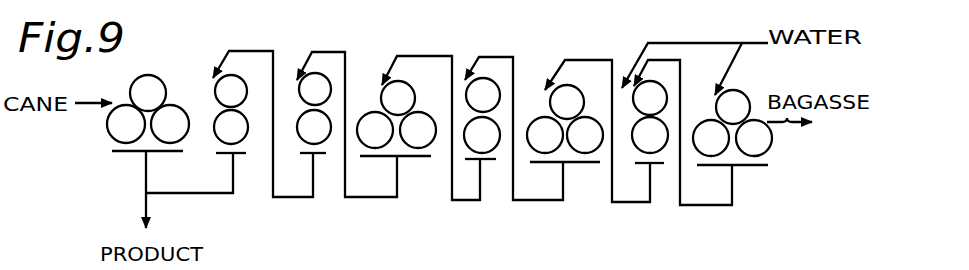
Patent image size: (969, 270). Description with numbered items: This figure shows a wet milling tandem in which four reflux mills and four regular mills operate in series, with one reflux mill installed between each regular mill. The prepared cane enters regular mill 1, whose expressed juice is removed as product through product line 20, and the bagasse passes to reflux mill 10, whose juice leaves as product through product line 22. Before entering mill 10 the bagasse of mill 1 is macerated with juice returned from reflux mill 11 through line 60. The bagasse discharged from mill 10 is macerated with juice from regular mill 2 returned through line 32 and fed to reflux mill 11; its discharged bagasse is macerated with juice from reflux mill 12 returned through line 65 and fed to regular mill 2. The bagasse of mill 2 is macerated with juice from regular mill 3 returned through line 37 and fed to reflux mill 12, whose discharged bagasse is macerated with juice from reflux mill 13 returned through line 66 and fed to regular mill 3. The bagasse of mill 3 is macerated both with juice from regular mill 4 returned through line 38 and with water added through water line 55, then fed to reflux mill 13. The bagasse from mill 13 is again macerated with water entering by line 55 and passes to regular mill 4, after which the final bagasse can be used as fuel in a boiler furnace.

The regular mill 1 is at (156, 104).
The reflux mill 10 is at (242, 101).
The reflux mill 11 is at (326, 99).
The regular mill 2 is at (406, 109).
The reflux mill 12 is at (494, 105).
The regular mill 3 is at (575, 113).
The reflux mill 13 is at (661, 108).
The regular mill 4 is at (741, 118).
The product line 20 is at (146, 172).
The product line 22 is at (233, 188).
The reflux mill juice return line 60 is at (290, 197).
The regular mill juice return line 32 is at (383, 198).
The reflux mill juice return line 65 is at (470, 202).
The regular mill juice return line 37 is at (548, 202).
The reflux mill juice return line 66 is at (635, 205).
The regular mill juice return line 38 is at (717, 207).
The water line 55 is at (690, 43).